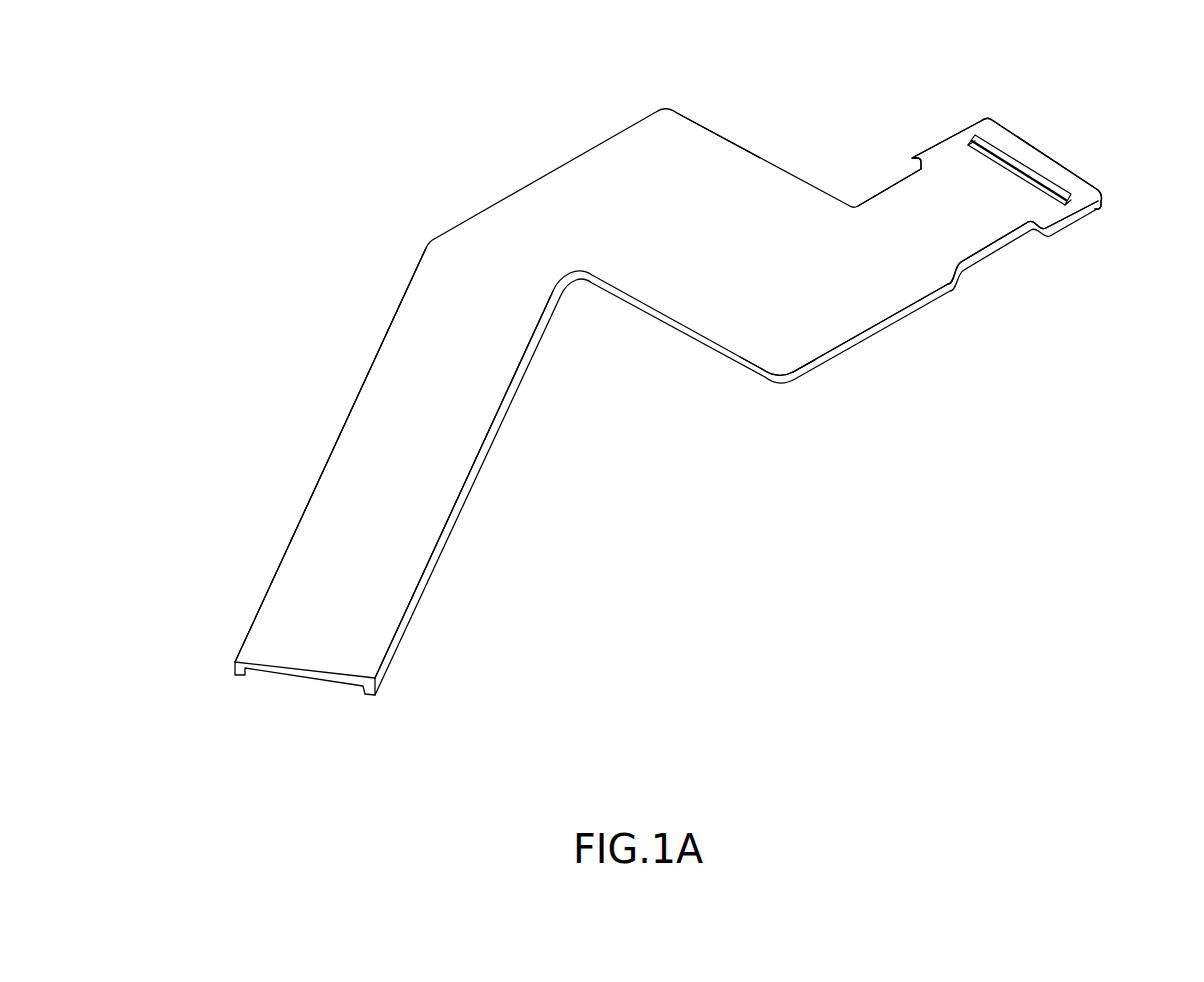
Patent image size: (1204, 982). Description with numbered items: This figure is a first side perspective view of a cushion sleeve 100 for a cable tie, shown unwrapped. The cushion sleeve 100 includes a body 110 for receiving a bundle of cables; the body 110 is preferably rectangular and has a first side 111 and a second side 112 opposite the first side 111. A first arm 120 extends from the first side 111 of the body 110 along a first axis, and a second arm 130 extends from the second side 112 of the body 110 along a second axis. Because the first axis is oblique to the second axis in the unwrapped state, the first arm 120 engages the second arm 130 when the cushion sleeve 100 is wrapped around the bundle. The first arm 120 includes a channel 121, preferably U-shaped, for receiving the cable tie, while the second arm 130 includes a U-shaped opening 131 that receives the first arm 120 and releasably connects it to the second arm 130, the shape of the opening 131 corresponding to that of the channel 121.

The cushion sleeve 100 is at (304, 164).
The body 110 is at (758, 200).
The first side 111 is at (735, 357).
The second side 112 is at (722, 130).
The first arm 120 is at (427, 327).
The channel 121 is at (259, 700).
The second arm 130 is at (958, 232).
The opening 131 is at (1097, 206).